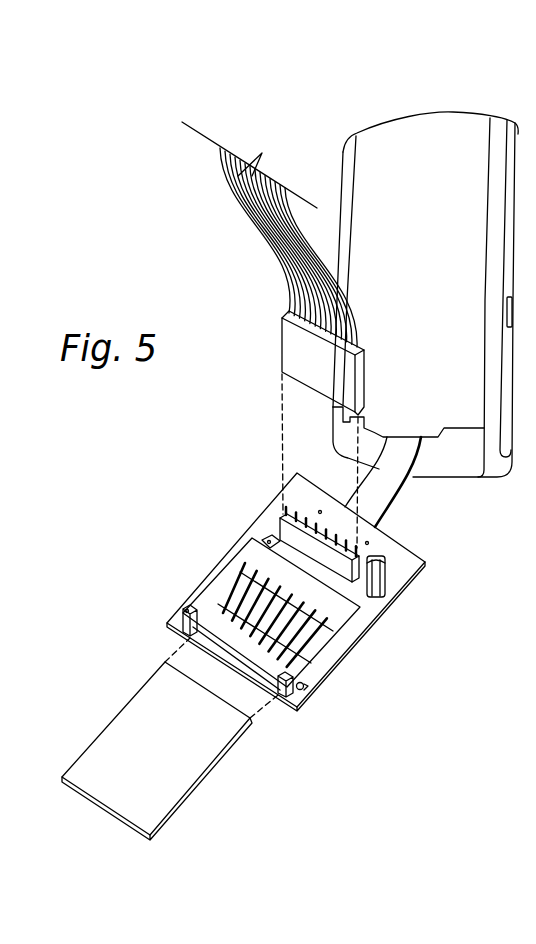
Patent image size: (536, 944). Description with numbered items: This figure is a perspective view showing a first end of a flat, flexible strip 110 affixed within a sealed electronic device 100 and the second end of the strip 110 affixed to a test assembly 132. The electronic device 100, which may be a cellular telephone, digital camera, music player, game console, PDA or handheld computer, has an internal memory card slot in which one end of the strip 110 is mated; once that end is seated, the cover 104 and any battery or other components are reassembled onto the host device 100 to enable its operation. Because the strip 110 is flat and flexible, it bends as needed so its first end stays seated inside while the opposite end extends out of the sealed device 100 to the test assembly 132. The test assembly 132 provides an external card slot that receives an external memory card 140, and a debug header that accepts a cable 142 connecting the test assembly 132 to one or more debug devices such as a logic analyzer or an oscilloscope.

The electronic device 100 is at (481, 124).
The cover 104 is at (437, 262).
The strip 110 is at (384, 488).
The test assembly 132 is at (266, 509).
The external memory card 140 is at (170, 758).
The cable 142 is at (257, 237).